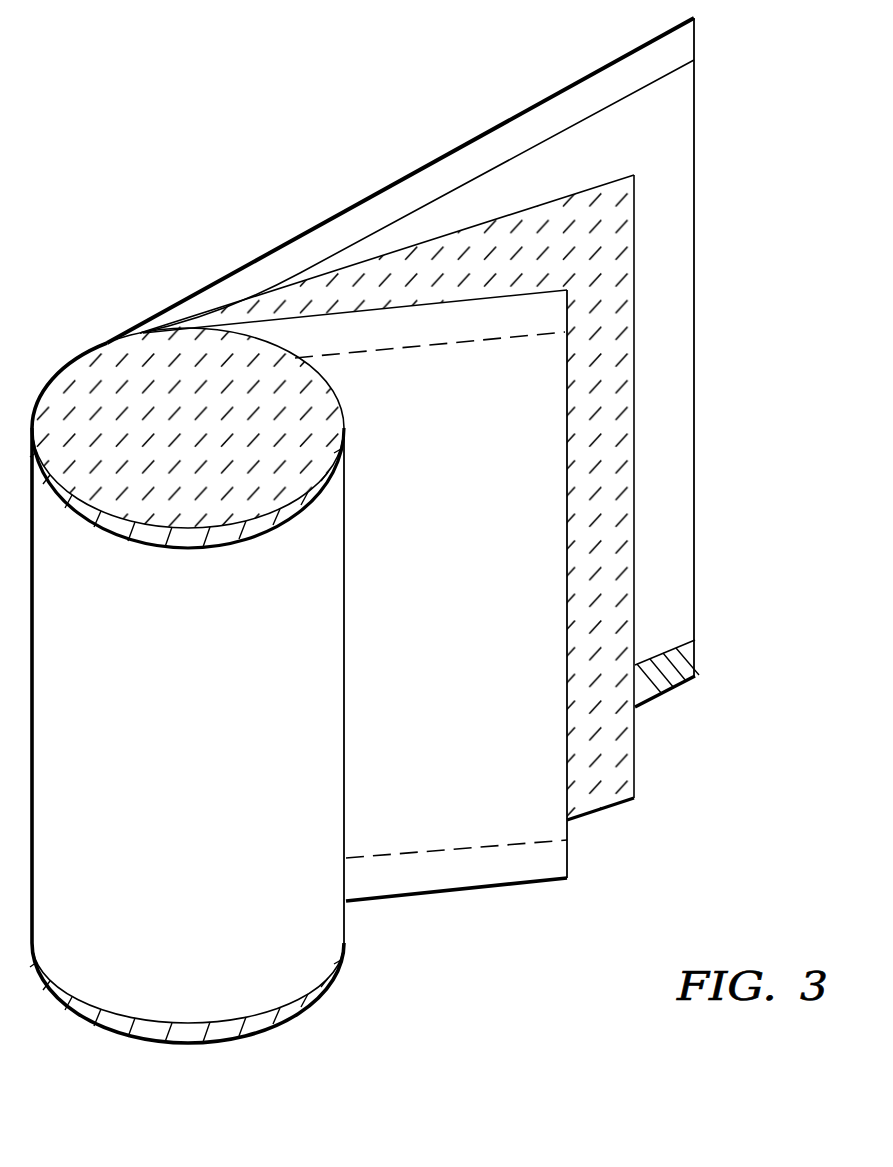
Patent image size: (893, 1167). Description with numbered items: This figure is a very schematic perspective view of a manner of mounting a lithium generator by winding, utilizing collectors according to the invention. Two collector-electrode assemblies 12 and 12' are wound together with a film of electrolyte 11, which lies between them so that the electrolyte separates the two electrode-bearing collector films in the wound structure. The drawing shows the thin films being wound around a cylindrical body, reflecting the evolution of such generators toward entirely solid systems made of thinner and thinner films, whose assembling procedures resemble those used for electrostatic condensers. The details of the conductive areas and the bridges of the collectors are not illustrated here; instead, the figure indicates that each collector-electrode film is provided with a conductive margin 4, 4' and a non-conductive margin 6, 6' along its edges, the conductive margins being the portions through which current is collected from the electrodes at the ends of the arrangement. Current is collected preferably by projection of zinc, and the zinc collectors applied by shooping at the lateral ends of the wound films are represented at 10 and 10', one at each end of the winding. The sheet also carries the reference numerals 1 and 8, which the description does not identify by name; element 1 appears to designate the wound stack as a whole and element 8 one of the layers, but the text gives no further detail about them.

The laminate assembly 1 is at (400, 360).
The conductive margin 4 is at (674, 690).
The conductive margin 4' is at (430, 255).
The non-conductive margin 6 is at (400, 177).
The non-conductive margin 6' is at (456, 898).
The second sheet 8 is at (557, 163).
The zinc collector 10 is at (187, 616).
The zinc collector 10' is at (207, 1003).
The film of electrolyte 11 is at (483, 250).
The collector-electrode assembly 12 is at (705, 362).
The collector-electrode assembly 12' is at (355, 584).